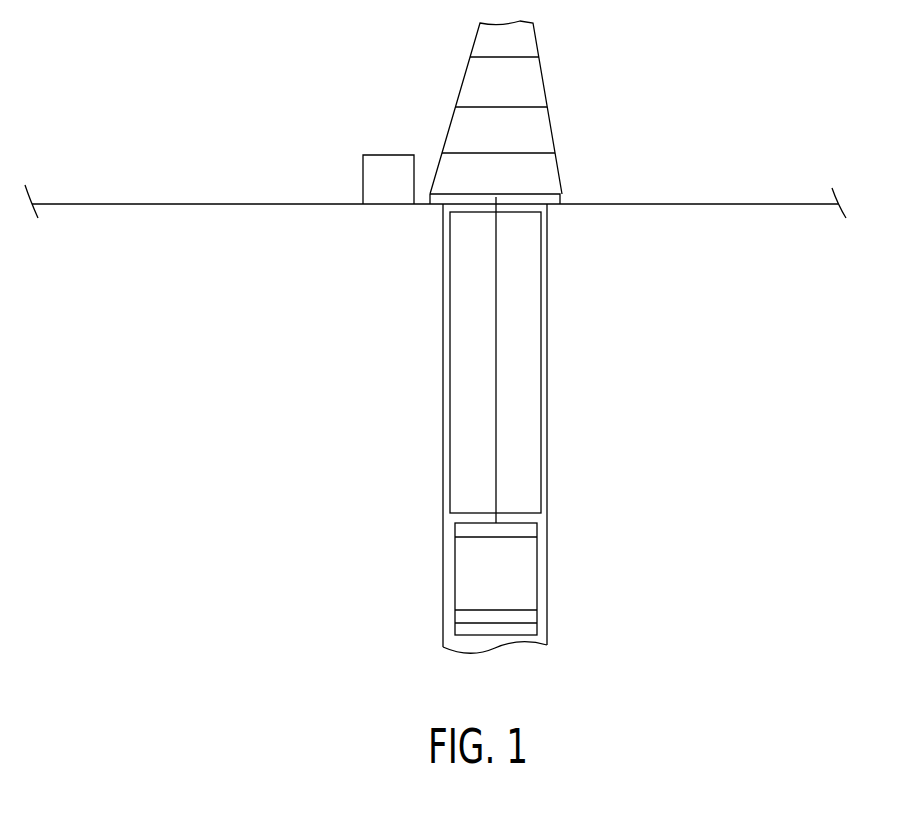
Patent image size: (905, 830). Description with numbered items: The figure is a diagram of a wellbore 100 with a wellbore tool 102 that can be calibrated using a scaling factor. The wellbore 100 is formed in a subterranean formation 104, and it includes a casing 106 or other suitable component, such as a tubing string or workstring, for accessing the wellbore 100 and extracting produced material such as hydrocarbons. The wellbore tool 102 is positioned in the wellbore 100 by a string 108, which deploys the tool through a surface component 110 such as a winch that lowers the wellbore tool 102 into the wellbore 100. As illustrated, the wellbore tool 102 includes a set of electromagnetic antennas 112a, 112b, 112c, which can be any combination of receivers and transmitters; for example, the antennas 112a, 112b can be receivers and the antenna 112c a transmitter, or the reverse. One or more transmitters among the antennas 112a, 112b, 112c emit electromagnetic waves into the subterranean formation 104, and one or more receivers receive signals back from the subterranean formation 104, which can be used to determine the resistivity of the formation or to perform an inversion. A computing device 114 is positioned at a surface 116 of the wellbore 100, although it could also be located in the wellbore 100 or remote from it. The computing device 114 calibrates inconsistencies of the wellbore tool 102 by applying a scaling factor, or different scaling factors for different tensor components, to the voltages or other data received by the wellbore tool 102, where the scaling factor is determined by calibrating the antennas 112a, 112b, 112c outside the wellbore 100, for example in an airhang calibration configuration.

The wellbore 100 is at (547, 345).
The wellbore tool 102 is at (455, 582).
The subterranean formation 104 is at (247, 380).
The casing 106 is at (541, 262).
The string 108 is at (494, 447).
The surface component 110 is at (555, 203).
The antenna 112a is at (537, 623).
The antenna 112b is at (537, 611).
The antenna 112c is at (537, 536).
The computing device 114 is at (388, 163).
The surface 116 is at (250, 204).